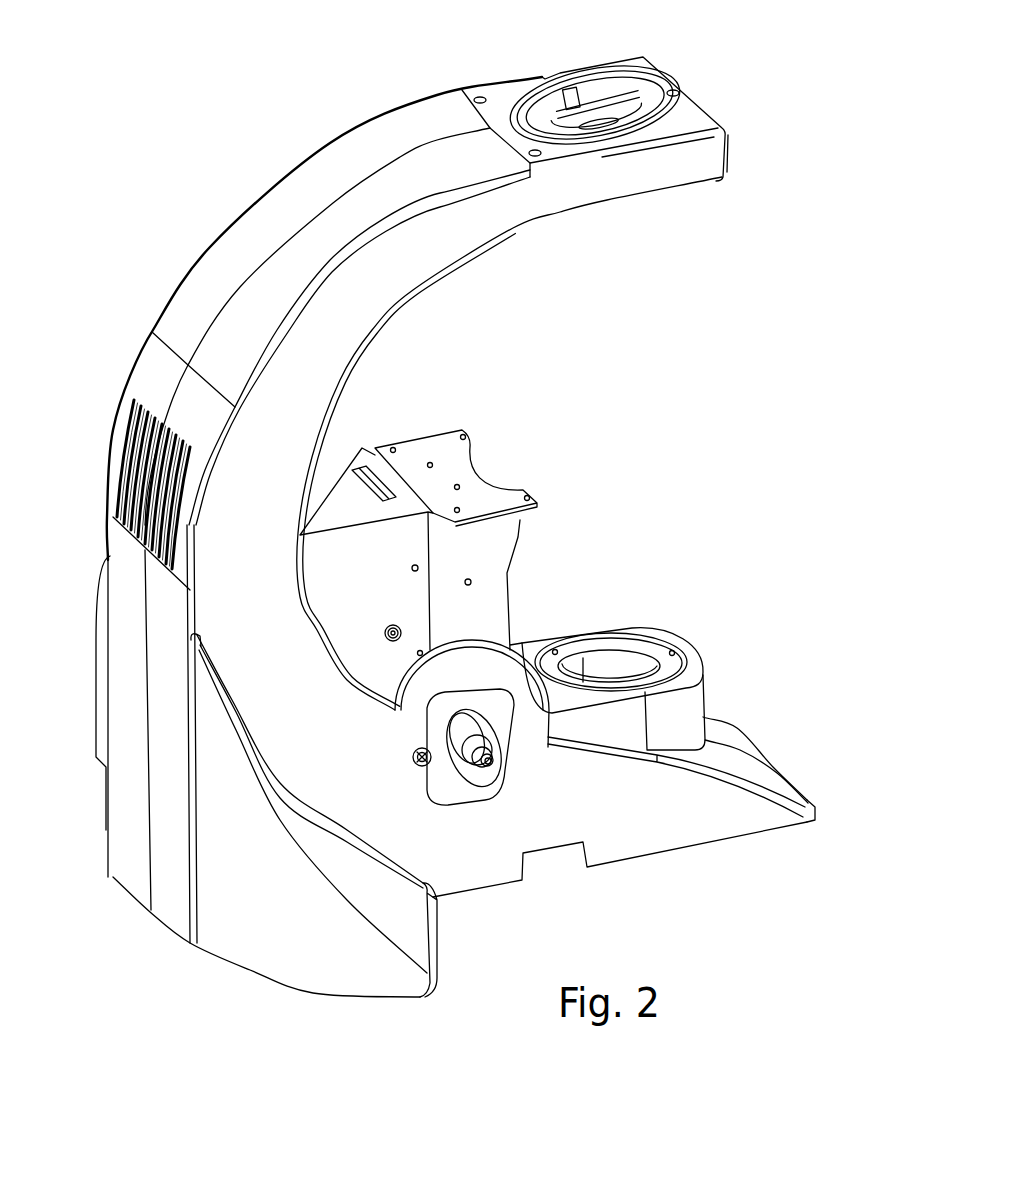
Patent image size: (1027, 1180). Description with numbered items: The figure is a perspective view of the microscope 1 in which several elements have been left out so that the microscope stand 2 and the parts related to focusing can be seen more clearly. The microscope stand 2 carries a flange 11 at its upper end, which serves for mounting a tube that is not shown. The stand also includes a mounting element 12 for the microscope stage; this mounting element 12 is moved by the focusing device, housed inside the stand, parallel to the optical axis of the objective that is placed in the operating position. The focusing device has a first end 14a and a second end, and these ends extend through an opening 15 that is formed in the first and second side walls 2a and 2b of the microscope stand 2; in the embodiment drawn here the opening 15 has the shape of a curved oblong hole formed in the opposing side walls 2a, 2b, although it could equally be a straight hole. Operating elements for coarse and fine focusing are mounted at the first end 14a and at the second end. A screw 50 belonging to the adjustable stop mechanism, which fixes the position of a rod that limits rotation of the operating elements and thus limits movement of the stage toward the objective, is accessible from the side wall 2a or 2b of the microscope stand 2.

The microscope 1 is at (188, 142).
The microscope stand 2 is at (160, 365).
The first side wall 2a is at (497, 223).
The second side wall 2b is at (327, 145).
The flange 11 is at (633, 98).
The mounting element 12 is at (448, 458).
The first end 14a is at (492, 765).
The opening 15 is at (460, 773).
The screw 50 is at (388, 643).